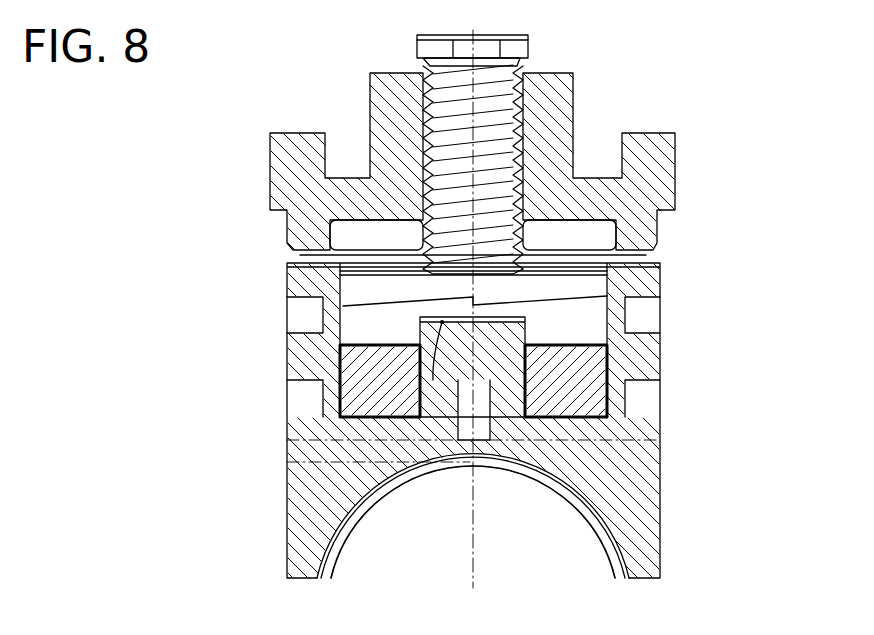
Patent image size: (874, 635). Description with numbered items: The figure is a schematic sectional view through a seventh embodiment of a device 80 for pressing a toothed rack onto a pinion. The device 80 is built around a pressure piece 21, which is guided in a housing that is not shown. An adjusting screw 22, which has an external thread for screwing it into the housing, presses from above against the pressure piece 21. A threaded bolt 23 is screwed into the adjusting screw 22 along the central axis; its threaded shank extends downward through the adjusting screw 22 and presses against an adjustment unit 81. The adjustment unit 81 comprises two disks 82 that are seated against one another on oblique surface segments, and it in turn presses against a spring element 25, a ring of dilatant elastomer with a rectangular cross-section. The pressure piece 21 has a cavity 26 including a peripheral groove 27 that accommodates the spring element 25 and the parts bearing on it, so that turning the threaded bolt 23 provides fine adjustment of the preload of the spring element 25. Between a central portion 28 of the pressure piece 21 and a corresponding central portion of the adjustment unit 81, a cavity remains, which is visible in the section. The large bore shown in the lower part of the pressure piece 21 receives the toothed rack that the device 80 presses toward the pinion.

The pressure piece 21 is at (643, 484).
The adjusting screw 22 is at (550, 73).
The threaded bolt 23 is at (452, 96).
The spring element 25 is at (574, 389).
The cavity 26 is at (450, 445).
The peripheral groove 27 is at (340, 415).
The central portion 28 is at (485, 335).
The device for pressing the toothed rack onto the pinion 80 is at (766, 178).
The adjustment unit 81 is at (614, 296).
The disks 82 is at (355, 290).